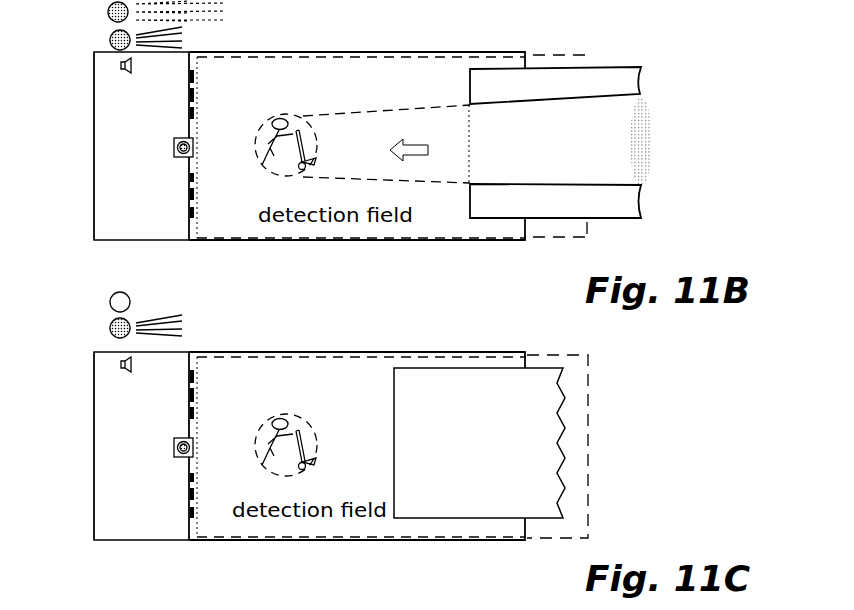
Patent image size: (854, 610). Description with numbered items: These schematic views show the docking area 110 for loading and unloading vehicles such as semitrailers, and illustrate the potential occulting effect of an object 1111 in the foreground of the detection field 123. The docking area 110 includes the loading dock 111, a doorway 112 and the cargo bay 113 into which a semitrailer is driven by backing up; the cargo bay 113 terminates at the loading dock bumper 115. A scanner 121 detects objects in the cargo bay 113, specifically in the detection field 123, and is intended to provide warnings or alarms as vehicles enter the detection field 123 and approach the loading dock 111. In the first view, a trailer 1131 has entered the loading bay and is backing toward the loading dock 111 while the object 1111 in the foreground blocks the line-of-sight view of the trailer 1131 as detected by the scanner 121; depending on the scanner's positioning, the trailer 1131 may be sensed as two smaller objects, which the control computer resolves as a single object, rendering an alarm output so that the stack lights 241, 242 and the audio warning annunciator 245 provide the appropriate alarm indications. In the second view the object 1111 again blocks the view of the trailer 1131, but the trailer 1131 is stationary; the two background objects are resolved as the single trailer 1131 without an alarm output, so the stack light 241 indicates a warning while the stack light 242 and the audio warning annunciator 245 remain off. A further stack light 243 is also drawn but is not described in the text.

In FIG. 11B, the docking area 110 is at (323, 27).
In FIG. 11C, the docking area 110 is at (322, 325).
In FIG. 11B, the loading dock 111 is at (154, 140).
In FIG. 11C, the loading dock 111 is at (154, 440).
In FIG. 11B, the doorway 112 is at (95, 213).
In FIG. 11C, the doorway 112 is at (95, 513).
In FIG. 11B, the cargo bay 113 is at (420, 51).
In FIG. 11C, the cargo bay 113 is at (420, 351).
In FIG. 11B, the loading dock bumper 115 is at (196, 64).
In FIG. 11C, the loading dock bumper 115 is at (196, 363).
In FIG. 11B, the scanner 121 is at (194, 148).
In FIG. 11C, the scanner 121 is at (194, 447).
In FIG. 11B, the detection field 123 is at (546, 54).
In FIG. 11C, the detection field 123 is at (546, 355).
In FIG. 11B, the object 1111 is at (262, 161).
In FIG. 11C, the object 1111 is at (312, 427).
In FIG. 11B, the trailer 1131 is at (653, 68).
In FIG. 11C, the trailer 1131 is at (490, 483).
In FIG. 11B, the stack light 241 is at (110, 41).
In FIG. 11C, the stack light 241 is at (110, 330).
In FIG. 11B, the stack light 242 is at (108, 14).
In FIG. 11C, the stack light 242 is at (110, 306).
In FIG. 11C, the warning light 243 is at (68, 606).
In FIG. 11B, the audio warning annunciator 245 is at (120, 65).
In FIG. 11C, the audio warning annunciator 245 is at (120, 363).